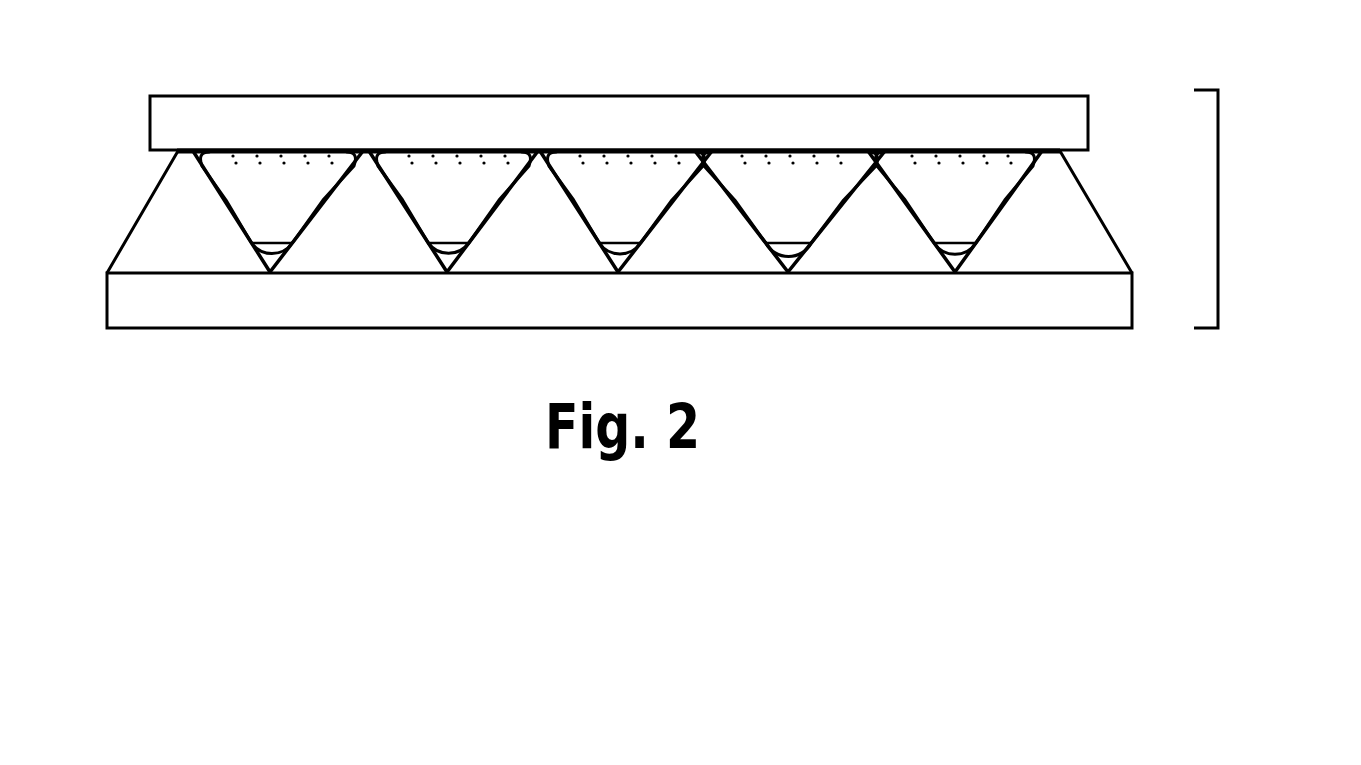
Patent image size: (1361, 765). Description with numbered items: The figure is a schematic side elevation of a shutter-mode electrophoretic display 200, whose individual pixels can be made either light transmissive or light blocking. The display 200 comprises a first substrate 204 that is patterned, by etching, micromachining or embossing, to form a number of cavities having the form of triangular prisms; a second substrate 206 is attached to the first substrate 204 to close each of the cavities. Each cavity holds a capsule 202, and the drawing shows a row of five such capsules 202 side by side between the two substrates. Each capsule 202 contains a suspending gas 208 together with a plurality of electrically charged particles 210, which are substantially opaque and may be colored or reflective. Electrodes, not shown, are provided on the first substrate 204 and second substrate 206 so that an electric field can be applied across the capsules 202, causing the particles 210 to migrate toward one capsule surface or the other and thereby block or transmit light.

The electrophoretic display 200 is at (1218, 202).
The capsule 202 is at (268, 252).
The first substrate 204 is at (107, 273).
The second substrate 206 is at (731, 96).
The suspending gas 208 is at (240, 197).
The electrically charged particles 210 is at (297, 160).